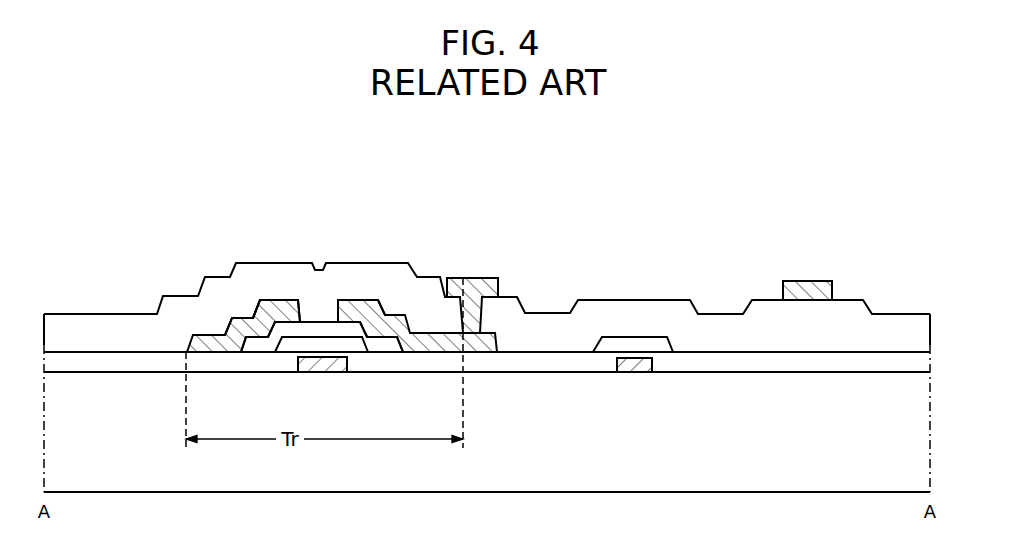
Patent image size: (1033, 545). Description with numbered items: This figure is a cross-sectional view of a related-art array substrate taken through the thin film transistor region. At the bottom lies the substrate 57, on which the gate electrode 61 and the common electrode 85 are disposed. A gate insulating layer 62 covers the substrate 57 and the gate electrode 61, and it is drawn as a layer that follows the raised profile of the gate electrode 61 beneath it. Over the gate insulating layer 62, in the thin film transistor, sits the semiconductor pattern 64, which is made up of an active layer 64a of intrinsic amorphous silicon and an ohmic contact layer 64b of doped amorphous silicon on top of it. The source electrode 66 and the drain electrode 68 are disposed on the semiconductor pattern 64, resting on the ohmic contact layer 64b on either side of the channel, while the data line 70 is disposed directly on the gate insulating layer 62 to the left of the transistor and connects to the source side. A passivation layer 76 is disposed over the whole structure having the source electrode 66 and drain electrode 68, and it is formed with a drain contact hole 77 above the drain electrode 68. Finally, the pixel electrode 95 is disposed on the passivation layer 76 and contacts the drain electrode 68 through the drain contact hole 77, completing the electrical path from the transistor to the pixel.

The substrate 57 is at (863, 448).
The gate electrode 61 is at (322, 372).
The gate insulating layer 62 is at (545, 364).
The semiconductor pattern 64 is at (322, 250).
The active layer 64a is at (330, 333).
The ohmic contact layer 64b is at (277, 307).
The source electrode 66 is at (238, 317).
The drain electrode 68 is at (397, 308).
The data line 70 is at (203, 340).
The passivation layer 76 is at (633, 315).
The drain contact hole 77 is at (468, 292).
The common electrode 85 is at (636, 366).
The pixel electrode 95 is at (800, 292).